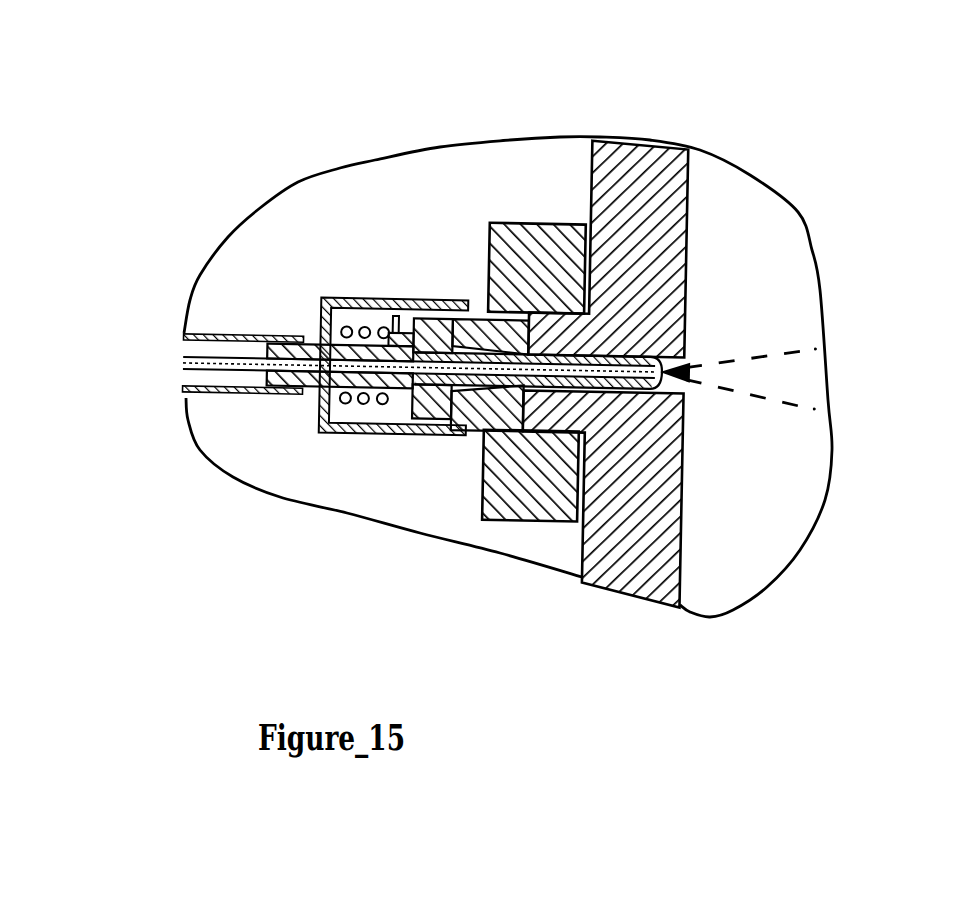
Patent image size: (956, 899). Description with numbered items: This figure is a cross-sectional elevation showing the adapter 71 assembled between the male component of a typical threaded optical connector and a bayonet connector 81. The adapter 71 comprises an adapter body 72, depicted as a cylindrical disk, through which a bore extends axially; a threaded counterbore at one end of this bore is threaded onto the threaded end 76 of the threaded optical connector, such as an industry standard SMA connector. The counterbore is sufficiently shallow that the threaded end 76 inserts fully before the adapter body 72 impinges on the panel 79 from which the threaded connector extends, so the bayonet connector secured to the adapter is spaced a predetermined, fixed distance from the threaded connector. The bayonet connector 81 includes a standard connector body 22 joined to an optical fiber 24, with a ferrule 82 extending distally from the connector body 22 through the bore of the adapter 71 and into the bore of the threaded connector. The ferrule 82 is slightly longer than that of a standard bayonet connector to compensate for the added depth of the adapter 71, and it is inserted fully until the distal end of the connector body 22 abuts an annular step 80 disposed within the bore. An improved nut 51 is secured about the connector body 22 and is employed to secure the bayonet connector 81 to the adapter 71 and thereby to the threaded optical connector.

The connector body 22 is at (278, 335).
The optical fiber 24 is at (205, 357).
The improved nut 51 is at (320, 420).
The adapter 71 is at (480, 530).
The adapter body 72 is at (527, 222).
The threaded end 76 is at (490, 228).
The panel 79 is at (632, 180).
The annular step 80 is at (452, 395).
The bayonet connector 81 is at (329, 250).
The ferrule 82 is at (640, 395).